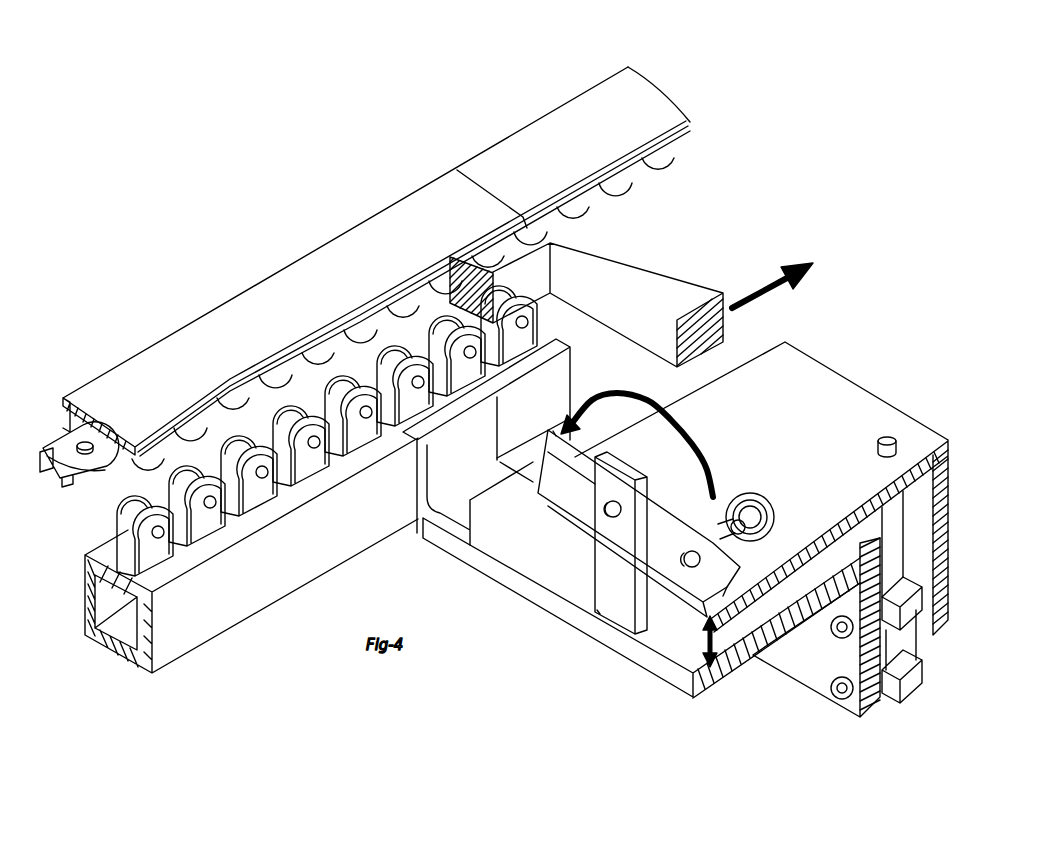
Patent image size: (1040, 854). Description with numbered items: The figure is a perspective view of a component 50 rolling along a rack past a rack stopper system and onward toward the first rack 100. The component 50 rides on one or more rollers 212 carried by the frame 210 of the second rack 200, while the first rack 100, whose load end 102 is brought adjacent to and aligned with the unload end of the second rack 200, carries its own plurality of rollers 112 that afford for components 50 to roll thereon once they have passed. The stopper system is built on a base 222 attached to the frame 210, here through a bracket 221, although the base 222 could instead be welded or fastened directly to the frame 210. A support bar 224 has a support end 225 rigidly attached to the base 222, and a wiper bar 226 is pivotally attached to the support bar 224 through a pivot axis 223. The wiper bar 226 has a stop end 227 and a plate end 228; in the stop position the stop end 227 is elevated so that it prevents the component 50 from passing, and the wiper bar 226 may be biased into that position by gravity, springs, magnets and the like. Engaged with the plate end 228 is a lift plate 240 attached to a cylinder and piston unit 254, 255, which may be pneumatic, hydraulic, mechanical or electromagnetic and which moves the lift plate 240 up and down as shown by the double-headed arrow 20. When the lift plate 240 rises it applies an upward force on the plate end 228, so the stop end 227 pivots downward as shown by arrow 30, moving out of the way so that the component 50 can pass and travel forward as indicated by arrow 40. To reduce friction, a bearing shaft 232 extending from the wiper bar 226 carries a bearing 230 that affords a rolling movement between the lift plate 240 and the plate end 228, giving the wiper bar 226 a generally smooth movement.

The first rack 100 is at (648, 70).
The load end 102 is at (528, 120).
The rollers 112 is at (668, 142).
The second rack 200 is at (176, 270).
The frame 210 is at (330, 242).
The rollers 212 is at (121, 517).
The double-headed arrow 20 is at (718, 652).
The arrow 30 is at (614, 386).
The arrow 40 is at (766, 283).
The component 50 is at (650, 273).
The bracket 221 is at (488, 503).
The base 222 is at (640, 660).
The pivot axis 223 is at (604, 507).
The support bar 224 is at (630, 568).
The support end 225 is at (600, 612).
The wiper bar 226 is at (676, 511).
The stop end 227 is at (554, 430).
The plate end 228 is at (732, 584).
The bearing 230 is at (748, 490).
The bearing shaft 232 is at (745, 533).
The lift plate 240 is at (800, 378).
The cylinder and piston unit 254 is at (897, 632).
The cylinder and piston unit 255 is at (893, 515).